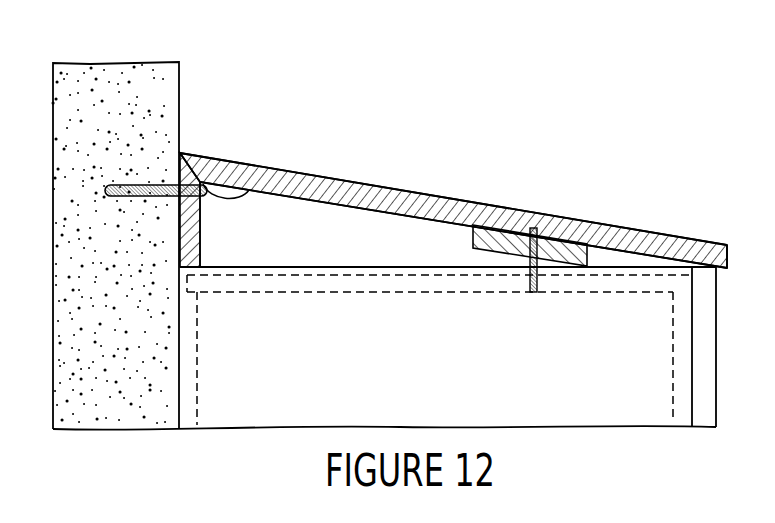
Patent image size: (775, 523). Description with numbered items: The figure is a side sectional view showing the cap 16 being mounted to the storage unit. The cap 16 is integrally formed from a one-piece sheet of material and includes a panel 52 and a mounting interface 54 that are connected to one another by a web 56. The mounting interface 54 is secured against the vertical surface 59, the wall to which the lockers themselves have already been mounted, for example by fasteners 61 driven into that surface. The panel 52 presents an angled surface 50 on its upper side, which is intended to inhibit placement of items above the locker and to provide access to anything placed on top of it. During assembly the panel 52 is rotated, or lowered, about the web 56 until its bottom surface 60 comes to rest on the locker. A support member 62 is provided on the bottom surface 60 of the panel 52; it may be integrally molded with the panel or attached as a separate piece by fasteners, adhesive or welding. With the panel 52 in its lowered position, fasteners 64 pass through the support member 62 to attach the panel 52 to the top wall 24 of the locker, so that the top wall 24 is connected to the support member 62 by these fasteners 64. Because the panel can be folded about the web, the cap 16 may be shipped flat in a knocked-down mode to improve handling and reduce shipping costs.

The cap 16 is at (461, 218).
The top wall 24 is at (383, 266).
The angled surface 50 is at (598, 223).
The panel 52 is at (729, 252).
The mounting interface 54 is at (201, 250).
The web 56 is at (181, 151).
The vertical surface 59 is at (181, 67).
The bottom surface 60 is at (305, 205).
The fasteners 61 is at (248, 191).
The support member 62 is at (498, 253).
The fasteners 64 is at (533, 294).